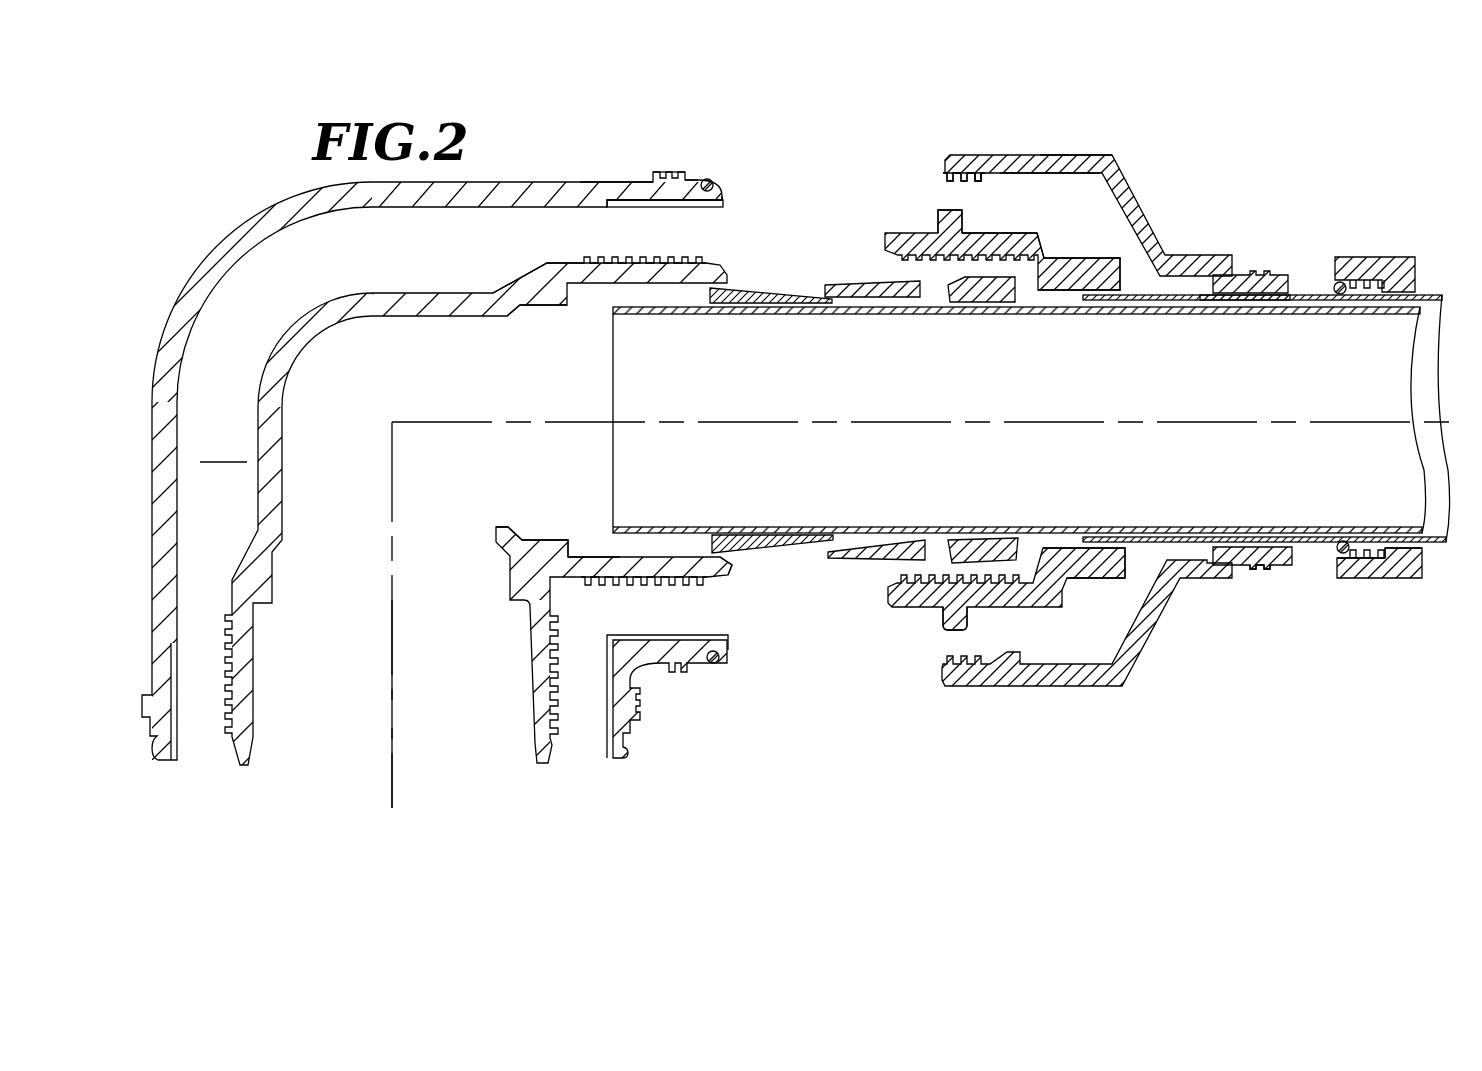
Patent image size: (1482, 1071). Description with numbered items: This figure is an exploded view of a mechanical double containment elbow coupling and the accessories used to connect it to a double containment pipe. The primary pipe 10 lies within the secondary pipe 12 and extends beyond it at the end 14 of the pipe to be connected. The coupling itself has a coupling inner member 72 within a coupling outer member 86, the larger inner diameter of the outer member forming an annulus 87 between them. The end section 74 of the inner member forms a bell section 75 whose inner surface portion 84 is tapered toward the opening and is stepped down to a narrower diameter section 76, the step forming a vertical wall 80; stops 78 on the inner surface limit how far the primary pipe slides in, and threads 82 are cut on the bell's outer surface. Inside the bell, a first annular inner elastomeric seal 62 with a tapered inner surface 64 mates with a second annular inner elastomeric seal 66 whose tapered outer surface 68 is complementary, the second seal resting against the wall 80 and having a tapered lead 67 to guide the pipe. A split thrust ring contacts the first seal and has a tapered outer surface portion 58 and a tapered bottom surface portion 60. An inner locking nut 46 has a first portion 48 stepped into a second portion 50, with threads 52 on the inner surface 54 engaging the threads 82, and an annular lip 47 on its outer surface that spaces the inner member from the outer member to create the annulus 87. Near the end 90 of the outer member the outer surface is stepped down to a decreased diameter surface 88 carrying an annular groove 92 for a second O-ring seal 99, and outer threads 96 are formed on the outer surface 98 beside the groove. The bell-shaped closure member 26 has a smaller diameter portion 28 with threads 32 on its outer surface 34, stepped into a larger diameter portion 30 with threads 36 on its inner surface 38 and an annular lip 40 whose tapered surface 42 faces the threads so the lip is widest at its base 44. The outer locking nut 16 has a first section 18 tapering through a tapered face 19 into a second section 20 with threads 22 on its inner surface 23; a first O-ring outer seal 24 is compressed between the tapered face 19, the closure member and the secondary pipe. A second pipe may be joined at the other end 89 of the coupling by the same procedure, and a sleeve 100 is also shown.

The primary pipeline section 10 is at (655, 314).
The secondary pipeline section 12 is at (1440, 295).
The end of the double containment pipe 14 is at (600, 442).
The outer locking nut 16 is at (1367, 249).
The first section of the outer locking nut 18 is at (1418, 578).
The tapered face 19 is at (1398, 560).
The second section of the outer locking nut 20 is at (1360, 580).
The threads on outer locking nut 22 is at (1343, 540).
The inner surface of the second section 23 is at (1378, 560).
The first O-ring outer seal 24 is at (1340, 552).
The annular closure member 26 is at (1157, 186).
The smaller diameter portion of the closure member 28 is at (1240, 275).
The larger diameter portion of the closure member 30 is at (1035, 173).
The threads on the smaller diameter portion 32 is at (1240, 568).
The outer surface of the smaller diameter portion 34 is at (1270, 568).
The threads on the larger diameter portion 36 is at (950, 176).
The inner surface of the larger diameter portion 38 is at (965, 181).
The annular lip 40 is at (1040, 180).
The tapered surface of the annular lip 42 is at (1000, 184).
The base of the annular lip 44 is at (1060, 175).
The inner locking nut 46 is at (1075, 585).
The annular lip of the inner locking nut 47 is at (940, 225).
The first portion of the inner locking nut 48 is at (1125, 578).
The second portion of the inner locking nut 50 is at (945, 612).
The threads on the inner locking nut 52 is at (960, 545).
The inner surface of the second portion 54 is at (1010, 580).
The tapered outer surface portion of the thrust ring 58 is at (950, 212).
The tapered bottom surface portion of the thrust ring 60 is at (965, 302).
The first annular inner elastomeric seal 62 is at (885, 245).
The tapered inner surface of the first inner seal 64 is at (880, 300).
The second annular inner elastomeric seal 66 is at (740, 296).
The tapered lead 67 is at (840, 545).
The tapered outer surface of the second inner seal 68 is at (845, 292).
The coupling inner member 72 is at (447, 284).
The end section of the coupling inner member 74 is at (725, 568).
The bell section 75 is at (578, 268).
The narrower diameter section 76 is at (548, 538).
The stops 78 is at (515, 318).
The vertical wall 80 is at (580, 548).
The threads on the bell section 82 is at (697, 258).
The tapered inner surface portion of the bell section 84 is at (712, 537).
The coupling outer member 86 is at (212, 242).
The annulus 87 is at (225, 440).
The decreased diameter surface 88 is at (716, 190).
The other end of the coupling 89 is at (476, 755).
The end of the coupling outer member 90 is at (727, 188).
The annular groove 92 is at (715, 198).
The outer threads 96 is at (655, 178).
The outer surface of the coupling outer member 98 is at (660, 172).
The second O-ring seal 99 is at (700, 178).
The sleeve 100 is at (1290, 294).